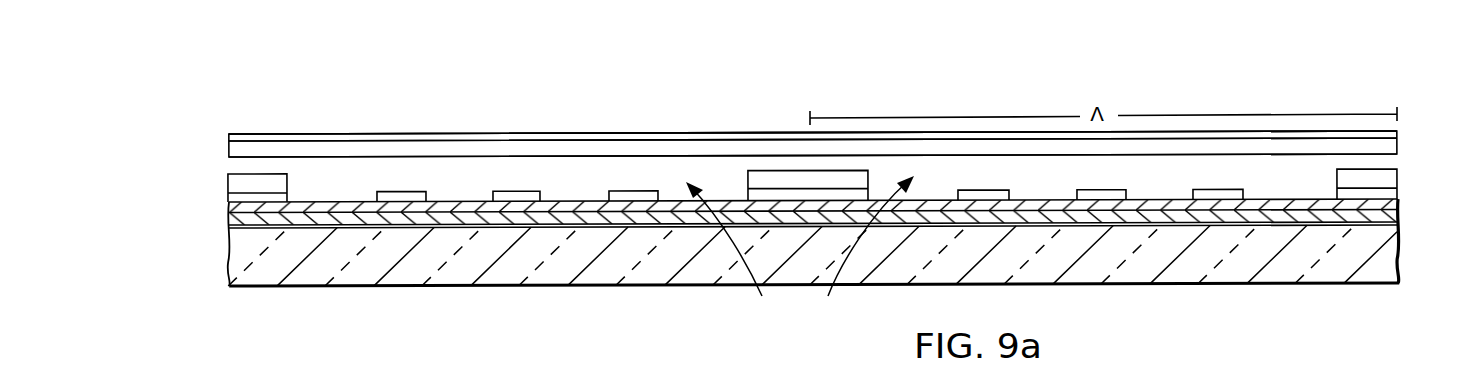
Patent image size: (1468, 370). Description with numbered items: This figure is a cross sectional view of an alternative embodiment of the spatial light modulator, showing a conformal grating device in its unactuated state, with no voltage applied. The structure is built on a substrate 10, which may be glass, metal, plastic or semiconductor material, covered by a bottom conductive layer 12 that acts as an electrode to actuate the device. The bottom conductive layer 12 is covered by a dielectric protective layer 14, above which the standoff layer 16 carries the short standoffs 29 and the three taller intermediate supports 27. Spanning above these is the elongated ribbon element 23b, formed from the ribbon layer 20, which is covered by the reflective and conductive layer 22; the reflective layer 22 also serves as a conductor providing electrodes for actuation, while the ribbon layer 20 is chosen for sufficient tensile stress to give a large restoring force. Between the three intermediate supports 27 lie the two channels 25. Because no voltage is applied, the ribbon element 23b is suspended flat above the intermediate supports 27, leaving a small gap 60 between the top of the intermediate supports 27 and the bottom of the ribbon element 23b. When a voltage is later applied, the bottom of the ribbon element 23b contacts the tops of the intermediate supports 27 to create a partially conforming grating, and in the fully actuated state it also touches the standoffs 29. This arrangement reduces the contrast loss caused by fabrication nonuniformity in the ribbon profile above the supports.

The substrate 10 is at (237, 265).
The bottom conductive layer 12 is at (236, 224).
The protective layer 14 is at (230, 214).
The standoff layer 16 is at (230, 203).
The ribbon layer 20 is at (230, 151).
The reflective and conductive layer 22 is at (230, 137).
The elongated ribbon element 23b is at (470, 133).
The channel 25 is at (800, 248).
The intermediate supports 27 is at (272, 182).
The standoffs 29 is at (398, 192).
The small gap 60 is at (260, 166).